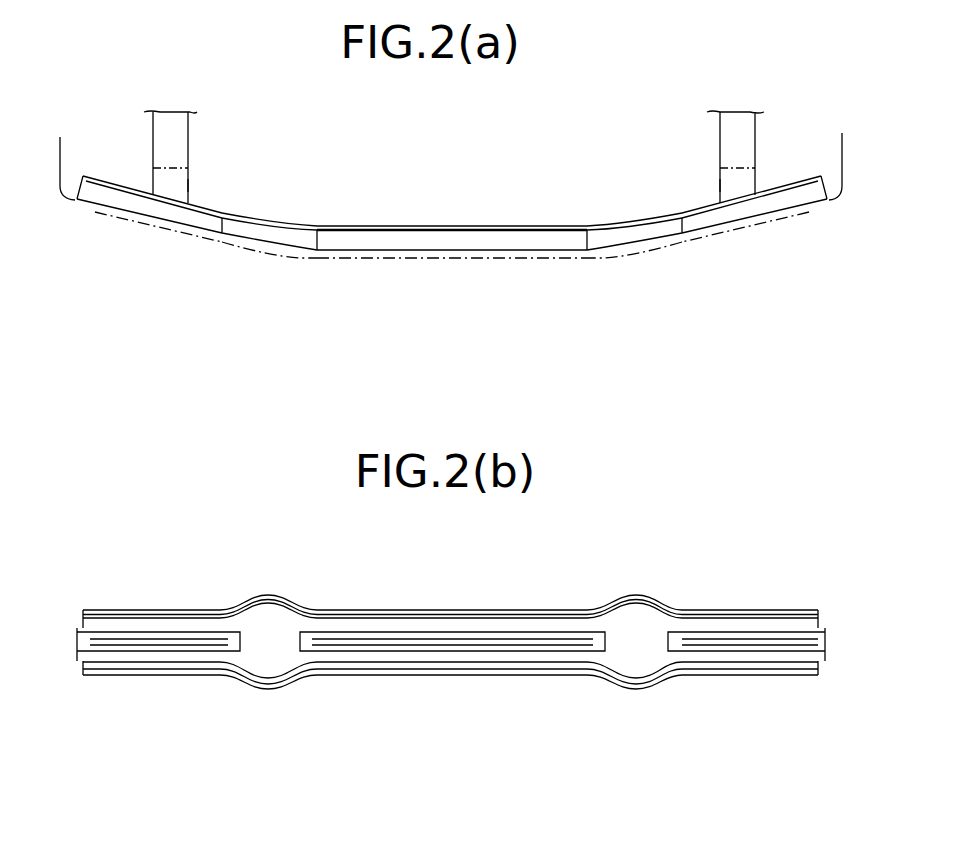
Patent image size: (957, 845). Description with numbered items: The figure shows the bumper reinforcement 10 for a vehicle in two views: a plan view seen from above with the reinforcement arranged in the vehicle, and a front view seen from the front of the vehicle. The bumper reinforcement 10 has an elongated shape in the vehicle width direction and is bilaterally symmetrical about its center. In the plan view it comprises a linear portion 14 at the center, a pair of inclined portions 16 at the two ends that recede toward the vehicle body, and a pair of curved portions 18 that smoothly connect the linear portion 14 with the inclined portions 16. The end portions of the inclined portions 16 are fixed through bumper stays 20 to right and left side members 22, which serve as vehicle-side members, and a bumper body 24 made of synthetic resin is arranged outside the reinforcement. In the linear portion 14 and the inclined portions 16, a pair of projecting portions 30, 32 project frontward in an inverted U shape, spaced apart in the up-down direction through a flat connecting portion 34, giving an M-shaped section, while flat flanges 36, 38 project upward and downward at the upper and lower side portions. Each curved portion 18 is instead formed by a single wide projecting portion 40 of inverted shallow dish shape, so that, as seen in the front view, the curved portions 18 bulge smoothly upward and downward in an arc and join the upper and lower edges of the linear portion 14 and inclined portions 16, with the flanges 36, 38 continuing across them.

In FIG. 2A, the bumper reinforcement 10 is at (443, 265).
In FIG. 2B, the bumper reinforcement 10 is at (445, 676).
In FIG. 2A, the linear portion 14 is at (452, 248).
In FIG. 2B, the linear portion 14 is at (452, 631).
In FIG. 2A, the inclined portions 16 is at (128, 246).
In FIG. 2B, the inclined portions 16 is at (130, 588).
In FIG. 2A, the curved portions 18 is at (284, 210).
In FIG. 2B, the curved portions 18 is at (254, 704).
In FIG. 2A, the bumper stays 20 is at (178, 185).
In FIG. 2A, the side members 22 is at (163, 142).
In FIG. 2A, the bumper body 24 is at (560, 259).
In FIG. 2A, the projecting portion 30 is at (158, 210).
In FIG. 2B, the projecting portion 30 is at (173, 628).
In FIG. 2B, the projecting portion 32 is at (107, 655).
In FIG. 2B, the connecting portion 34 is at (155, 646).
In FIG. 2A, the flange 36 is at (433, 226).
In FIG. 2B, the flange 36 is at (372, 629).
In FIG. 2B, the flange 38 is at (372, 670).
In FIG. 2A, the projecting portion 40 is at (245, 232).
In FIG. 2B, the projecting portion 40 is at (268, 628).